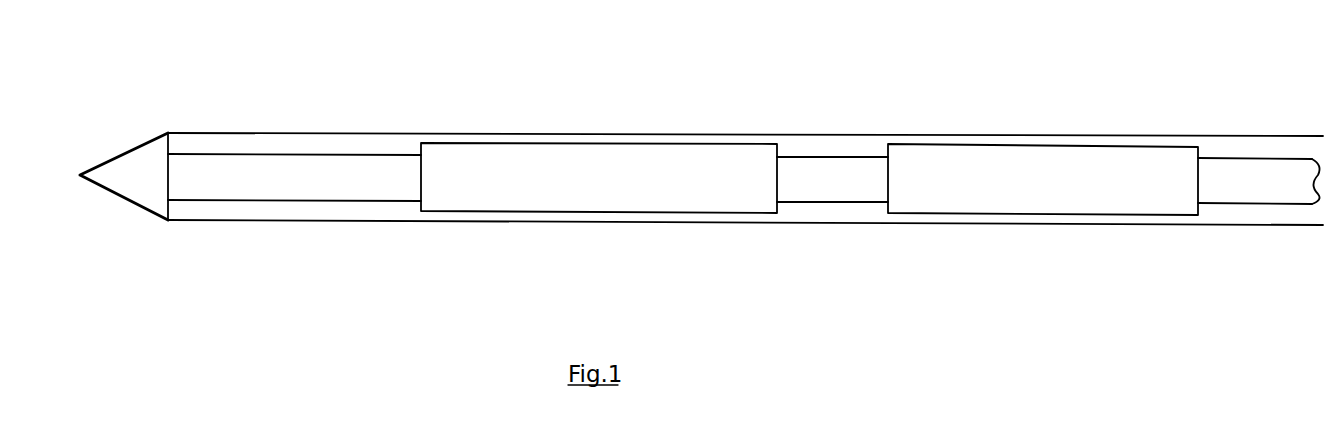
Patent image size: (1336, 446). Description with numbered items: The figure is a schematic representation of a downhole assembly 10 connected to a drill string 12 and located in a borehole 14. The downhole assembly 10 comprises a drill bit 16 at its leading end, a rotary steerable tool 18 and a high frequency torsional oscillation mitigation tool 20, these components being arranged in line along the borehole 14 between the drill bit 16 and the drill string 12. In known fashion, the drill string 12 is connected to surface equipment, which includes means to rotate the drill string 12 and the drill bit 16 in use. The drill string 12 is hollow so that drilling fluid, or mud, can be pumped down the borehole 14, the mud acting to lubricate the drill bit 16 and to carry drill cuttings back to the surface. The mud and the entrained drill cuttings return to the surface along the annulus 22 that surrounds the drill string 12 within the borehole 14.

The downhole assembly 10 is at (701, 217).
The drill string 12 is at (1284, 190).
The borehole 14 is at (1233, 226).
The drill bit 16 is at (136, 188).
The rotary steerable tool 18 is at (558, 158).
The high frequency torsional oscillation mitigation tool 20 is at (1010, 159).
The annulus 22 is at (292, 142).